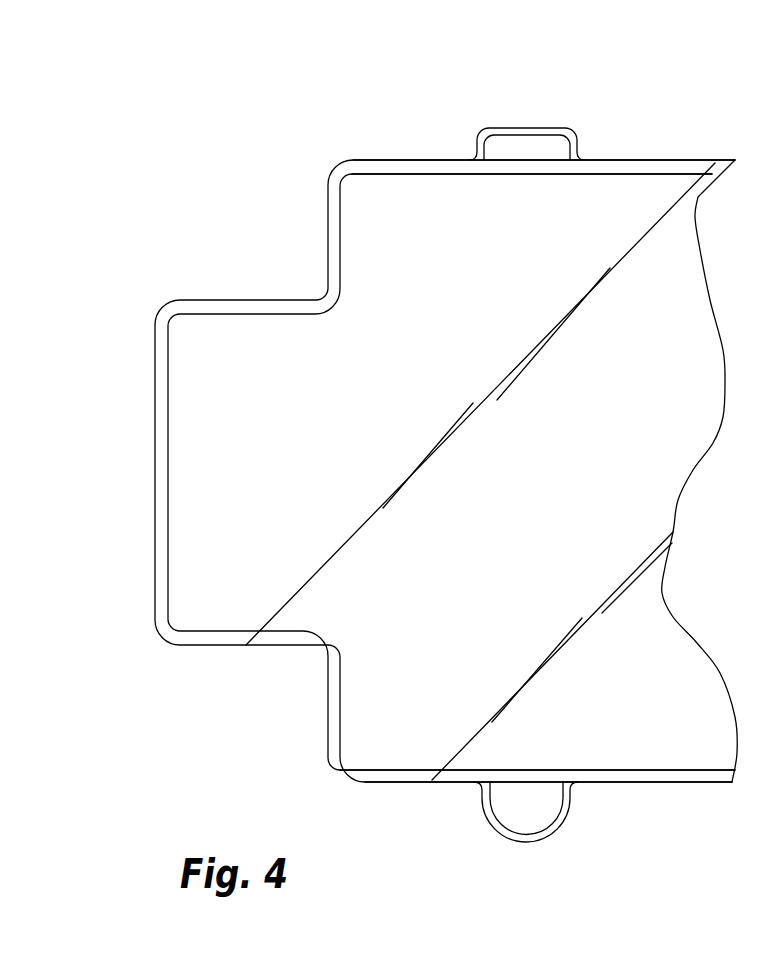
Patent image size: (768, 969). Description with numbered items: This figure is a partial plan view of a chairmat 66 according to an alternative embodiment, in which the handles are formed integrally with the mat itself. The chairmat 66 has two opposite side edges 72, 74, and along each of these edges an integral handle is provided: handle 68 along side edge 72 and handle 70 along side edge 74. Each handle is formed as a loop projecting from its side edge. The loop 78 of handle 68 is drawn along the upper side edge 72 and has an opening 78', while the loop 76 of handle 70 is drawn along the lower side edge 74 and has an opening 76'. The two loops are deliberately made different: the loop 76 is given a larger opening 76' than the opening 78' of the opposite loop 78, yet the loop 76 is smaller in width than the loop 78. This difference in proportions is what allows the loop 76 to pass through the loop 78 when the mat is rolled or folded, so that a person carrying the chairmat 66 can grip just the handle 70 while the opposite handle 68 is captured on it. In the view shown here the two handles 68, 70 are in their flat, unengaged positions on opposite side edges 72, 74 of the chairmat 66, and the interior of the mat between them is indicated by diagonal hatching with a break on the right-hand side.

The chairmat 66 is at (292, 681).
The integral handle 68 is at (545, 101).
The integral handle 70 is at (484, 846).
The side edge 72 is at (701, 158).
The side edge 74 is at (675, 785).
The loop 76 is at (526, 846).
The opening 76' is at (555, 826).
The loop 78 is at (519, 106).
The opening 78' is at (527, 104).